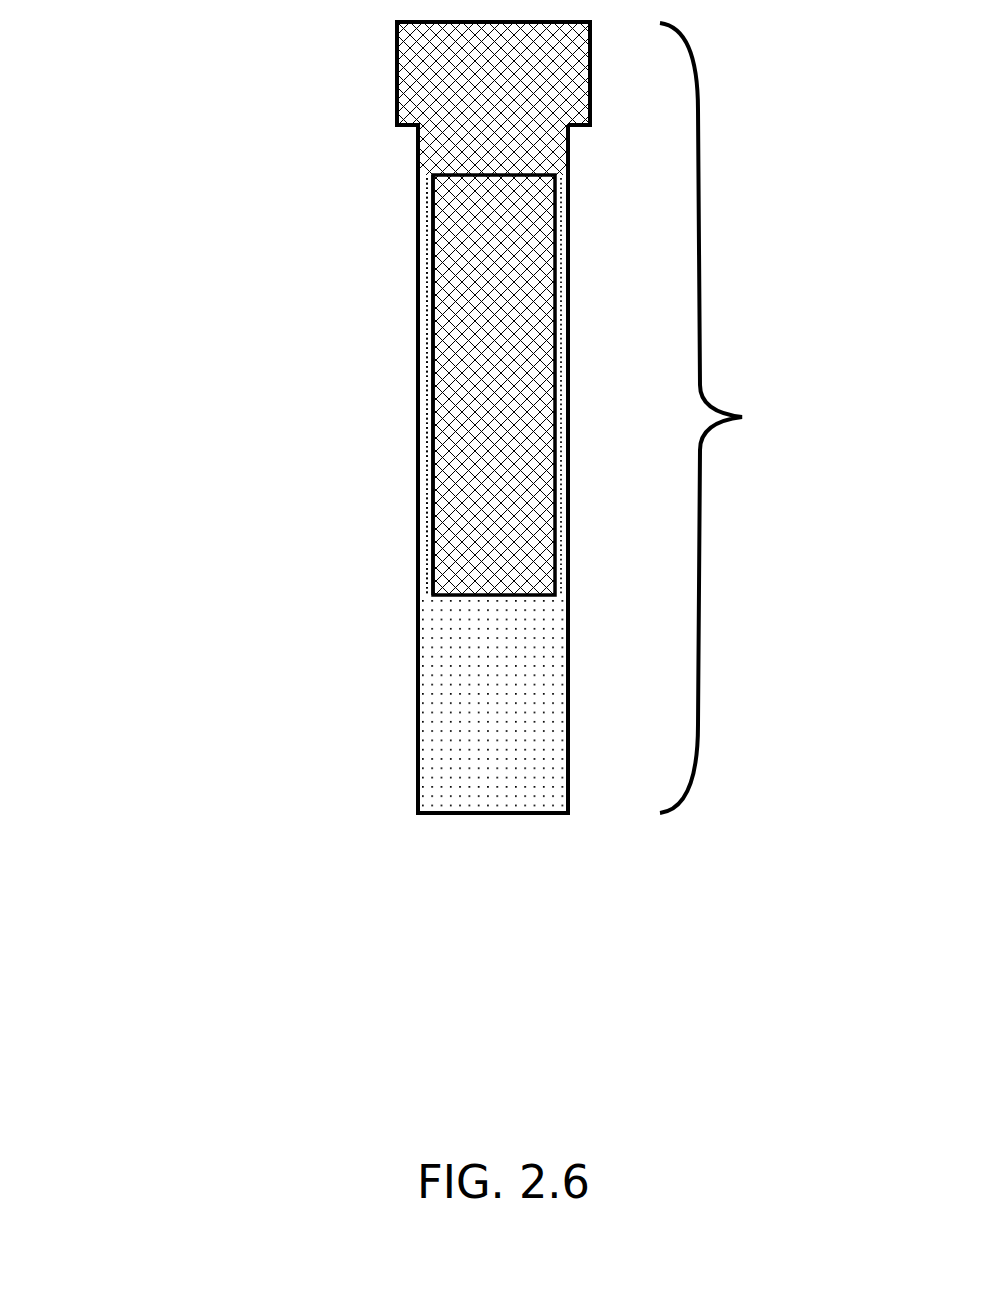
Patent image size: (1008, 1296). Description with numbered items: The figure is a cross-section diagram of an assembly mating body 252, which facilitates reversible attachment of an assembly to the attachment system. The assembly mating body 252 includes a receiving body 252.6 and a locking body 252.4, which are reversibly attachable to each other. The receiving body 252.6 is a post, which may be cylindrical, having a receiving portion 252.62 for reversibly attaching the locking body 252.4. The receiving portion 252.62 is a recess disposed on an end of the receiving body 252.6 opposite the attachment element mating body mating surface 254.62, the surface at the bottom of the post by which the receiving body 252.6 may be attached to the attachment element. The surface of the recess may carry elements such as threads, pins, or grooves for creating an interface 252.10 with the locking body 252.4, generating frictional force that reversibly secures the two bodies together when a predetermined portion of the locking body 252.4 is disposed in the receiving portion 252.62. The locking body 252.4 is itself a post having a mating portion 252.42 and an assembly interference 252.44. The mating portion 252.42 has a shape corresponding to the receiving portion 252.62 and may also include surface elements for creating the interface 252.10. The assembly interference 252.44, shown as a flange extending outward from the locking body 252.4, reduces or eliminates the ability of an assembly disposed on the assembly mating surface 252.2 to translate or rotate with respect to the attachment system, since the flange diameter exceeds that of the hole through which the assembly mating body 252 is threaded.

The assembly mating body 252 is at (772, 418).
The locking body 252.4 is at (448, 93).
The mating portion 252.42 is at (503, 315).
The assembly interference 252.44 is at (376, 142).
The interface 252.10 is at (408, 324).
The receiving portion 252.62 is at (393, 438).
The assembly mating surface 252.2 is at (387, 498).
The receiving body 252.6 is at (462, 704).
The attachment element mating body mating surface 254.62 is at (561, 845).